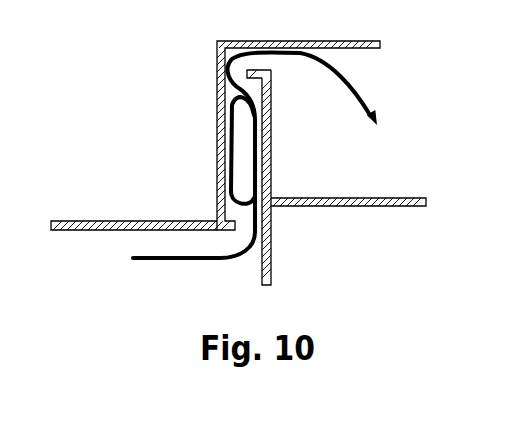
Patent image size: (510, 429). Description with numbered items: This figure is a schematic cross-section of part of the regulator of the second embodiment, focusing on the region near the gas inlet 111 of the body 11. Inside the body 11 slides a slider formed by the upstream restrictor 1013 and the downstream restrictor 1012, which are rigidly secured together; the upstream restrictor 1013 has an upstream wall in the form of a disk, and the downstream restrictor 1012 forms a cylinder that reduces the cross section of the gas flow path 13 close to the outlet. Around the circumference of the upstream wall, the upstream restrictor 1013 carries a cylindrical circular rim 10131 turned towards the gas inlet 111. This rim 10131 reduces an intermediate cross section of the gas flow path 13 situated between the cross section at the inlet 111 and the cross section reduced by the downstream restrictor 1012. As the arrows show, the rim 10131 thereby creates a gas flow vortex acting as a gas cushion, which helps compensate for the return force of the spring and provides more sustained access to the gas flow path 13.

The body 11 is at (361, 41).
The gas inlet 111 is at (106, 249).
The gas flow path 13 is at (372, 80).
The downstream restrictor 1012 is at (330, 203).
The upstream restrictor 1013 is at (271, 262).
The cylindrical circular rim 10131 is at (246, 71).